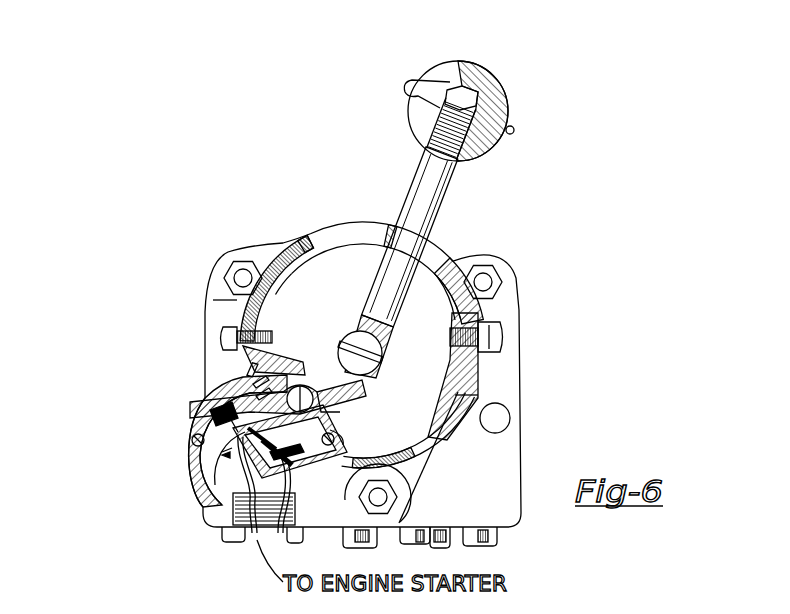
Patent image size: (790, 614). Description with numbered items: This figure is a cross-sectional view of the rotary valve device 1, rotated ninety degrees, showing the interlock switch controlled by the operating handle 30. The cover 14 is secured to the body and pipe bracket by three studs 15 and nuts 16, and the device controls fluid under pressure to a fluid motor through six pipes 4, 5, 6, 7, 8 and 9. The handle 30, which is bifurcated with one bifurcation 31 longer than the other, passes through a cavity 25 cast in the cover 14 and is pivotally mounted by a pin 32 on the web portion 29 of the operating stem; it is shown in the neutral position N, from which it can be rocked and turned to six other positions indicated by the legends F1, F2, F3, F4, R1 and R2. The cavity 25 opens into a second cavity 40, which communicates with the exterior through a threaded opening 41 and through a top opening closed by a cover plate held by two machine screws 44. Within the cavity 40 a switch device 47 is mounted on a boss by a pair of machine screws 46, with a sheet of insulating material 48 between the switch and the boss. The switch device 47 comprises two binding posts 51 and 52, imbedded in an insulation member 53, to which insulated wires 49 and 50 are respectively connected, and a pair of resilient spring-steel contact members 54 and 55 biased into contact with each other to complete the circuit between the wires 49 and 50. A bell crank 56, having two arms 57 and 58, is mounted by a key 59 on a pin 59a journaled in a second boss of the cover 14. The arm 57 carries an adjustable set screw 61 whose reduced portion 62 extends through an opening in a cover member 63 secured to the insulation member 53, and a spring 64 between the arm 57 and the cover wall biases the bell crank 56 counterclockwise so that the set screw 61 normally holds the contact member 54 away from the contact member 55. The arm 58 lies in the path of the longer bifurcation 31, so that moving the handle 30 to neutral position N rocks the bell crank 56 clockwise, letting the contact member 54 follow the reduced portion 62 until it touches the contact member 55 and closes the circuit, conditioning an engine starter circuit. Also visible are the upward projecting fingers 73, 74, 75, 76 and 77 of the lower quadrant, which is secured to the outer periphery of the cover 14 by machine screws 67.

The rotary valve device 1 is at (524, 400).
The pipe 4 is at (226, 535).
The pipe 5 is at (304, 538).
The pipe 6 is at (353, 548).
The pipe 7 is at (408, 544).
The pipe 8 is at (440, 548).
The pipe 9 is at (482, 546).
The cover 14 is at (468, 368).
The stud 15 is at (241, 277).
The nut 16 is at (231, 283).
The cavity 25 is at (327, 257).
The web portion 29 is at (383, 343).
The operating handle 30 is at (437, 201).
The bifurcation 31 is at (366, 378).
The pin 32 is at (383, 355).
The second cavity 40 is at (237, 380).
The threaded opening 41 is at (298, 513).
The machine screw 44 is at (193, 443).
The machine screw 46 is at (274, 459).
The switch device 47 is at (240, 447).
The insulating material 48 is at (222, 455).
The wire 49 is at (251, 535).
The wire 50 is at (281, 535).
The binding post 51 is at (243, 455).
The binding post 52 is at (334, 436).
The insulation member 53 is at (227, 477).
The contact member 54 is at (213, 430).
The contact member 55 is at (247, 407).
The bell crank 56 is at (316, 393).
The arm 57 is at (247, 395).
The arm 58 is at (362, 402).
The key 59 is at (318, 407).
The pin 59a is at (300, 390).
The adjustable set screw 61 is at (223, 407).
The reduced portion 62 is at (230, 423).
The cover member 63 is at (230, 450).
The spring 64 is at (245, 381).
The machine screw 67 is at (225, 337).
The finger 73 is at (490, 317).
The finger 74 is at (442, 308).
The finger 75 is at (387, 230).
The finger 76 is at (301, 242).
The finger 77 is at (227, 310).
The neutral position N is at (462, 125).
The first forward position F1 is at (363, 255).
The second forward position F2 is at (327, 258).
The third forward position F3 is at (283, 308).
The fourth forward position F4 is at (207, 267).
The first reverse position R1 is at (425, 282).
The second reverse position R2 is at (505, 280).